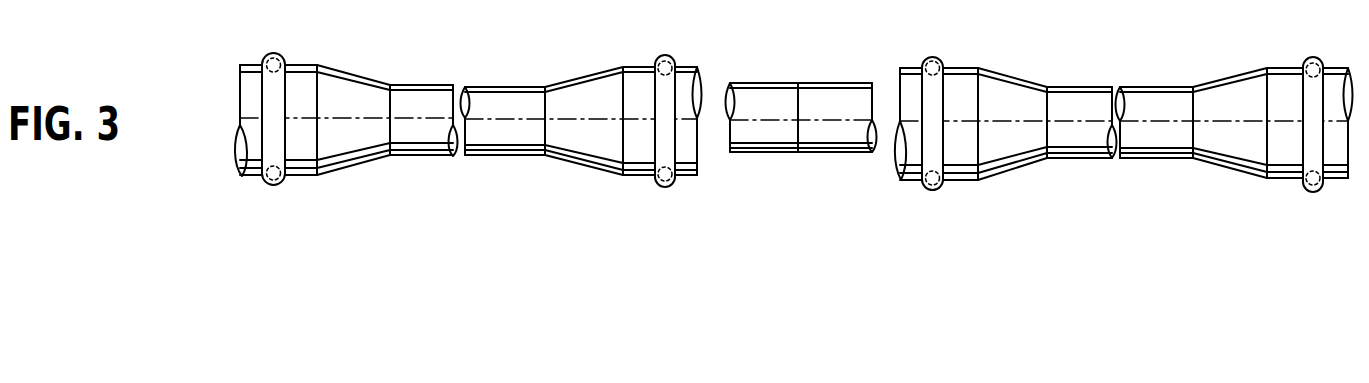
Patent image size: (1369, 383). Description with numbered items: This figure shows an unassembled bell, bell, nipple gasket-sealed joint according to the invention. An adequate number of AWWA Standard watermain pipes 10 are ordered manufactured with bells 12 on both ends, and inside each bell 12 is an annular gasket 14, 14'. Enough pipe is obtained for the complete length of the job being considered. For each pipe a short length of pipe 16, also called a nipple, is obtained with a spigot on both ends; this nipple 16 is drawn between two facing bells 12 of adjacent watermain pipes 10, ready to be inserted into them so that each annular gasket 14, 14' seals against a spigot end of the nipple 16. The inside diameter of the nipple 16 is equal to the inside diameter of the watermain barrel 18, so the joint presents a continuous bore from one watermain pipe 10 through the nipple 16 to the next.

The watermain pipe 10 is at (433, 77).
The bell 12 is at (302, 160).
The annular gasket 14 is at (792, 125).
The annular gasket 14' is at (773, 203).
The short length of pipe (nipple) 16 is at (837, 82).
The watermain barrel 18 is at (1095, 162).